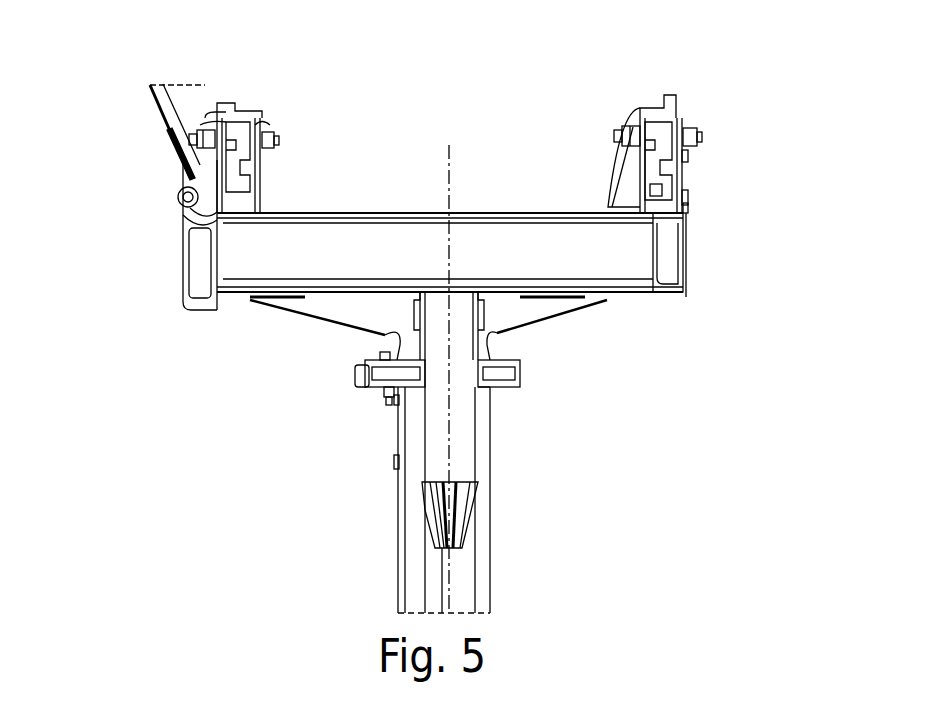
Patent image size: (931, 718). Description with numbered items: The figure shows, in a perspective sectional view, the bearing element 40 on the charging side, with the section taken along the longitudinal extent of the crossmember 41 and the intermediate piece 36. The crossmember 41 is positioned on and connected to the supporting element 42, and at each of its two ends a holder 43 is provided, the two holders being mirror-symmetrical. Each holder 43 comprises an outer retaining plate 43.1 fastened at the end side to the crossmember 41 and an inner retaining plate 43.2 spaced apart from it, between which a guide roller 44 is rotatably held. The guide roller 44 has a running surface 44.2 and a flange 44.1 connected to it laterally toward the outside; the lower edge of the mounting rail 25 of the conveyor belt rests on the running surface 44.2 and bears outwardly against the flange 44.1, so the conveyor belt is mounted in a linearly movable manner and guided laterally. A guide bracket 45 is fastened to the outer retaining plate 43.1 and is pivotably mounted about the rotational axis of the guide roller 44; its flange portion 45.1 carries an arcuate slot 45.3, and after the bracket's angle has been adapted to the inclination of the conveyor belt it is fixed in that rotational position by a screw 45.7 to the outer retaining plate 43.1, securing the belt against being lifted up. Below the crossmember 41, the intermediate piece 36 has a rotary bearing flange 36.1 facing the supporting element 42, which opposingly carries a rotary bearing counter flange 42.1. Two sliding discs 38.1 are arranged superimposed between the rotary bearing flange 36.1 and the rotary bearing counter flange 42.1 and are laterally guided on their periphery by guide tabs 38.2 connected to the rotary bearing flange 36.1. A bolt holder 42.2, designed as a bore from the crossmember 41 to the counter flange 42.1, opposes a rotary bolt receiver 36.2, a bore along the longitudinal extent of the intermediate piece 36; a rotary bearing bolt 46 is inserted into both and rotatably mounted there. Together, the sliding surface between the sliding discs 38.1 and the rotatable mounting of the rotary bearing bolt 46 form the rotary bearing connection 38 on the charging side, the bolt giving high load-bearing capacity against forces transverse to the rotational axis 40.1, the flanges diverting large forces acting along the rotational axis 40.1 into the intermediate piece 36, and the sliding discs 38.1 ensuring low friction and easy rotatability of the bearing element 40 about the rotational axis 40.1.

The mounting rail 25 is at (240, 118).
The intermediate piece 36 is at (462, 562).
The rotary bearing flange 36.1 is at (510, 382).
The rotary bolt receiver 36.2 is at (475, 468).
The rotary bearing connection on the charging side 38 is at (365, 400).
The sliding discs 38.1 is at (500, 335).
The guide tabs 38.2 is at (365, 380).
The bearing element on the charging side 40 is at (178, 292).
The rotational axis on the charging side 40.1 is at (449, 162).
The crossmember 41 is at (535, 213).
The supporting element 42 is at (277, 308).
The rotary bearing counter flange 42.1 is at (368, 365).
The bolt holder 42.2 is at (388, 334).
The holder 43 is at (270, 125).
The outer retaining plate 43.1 is at (207, 256).
The inner retaining plate 43.2 is at (262, 205).
The guide roller 44 is at (198, 146).
The flange 44.1 is at (212, 110).
The running surface 44.2 is at (253, 115).
The guide bracket 45 is at (193, 98).
The flange portion 45.1 is at (182, 172).
The slot 45.3 is at (185, 218).
The screw 45.7 is at (178, 193).
The rotary bearing bolt 46 is at (463, 450).